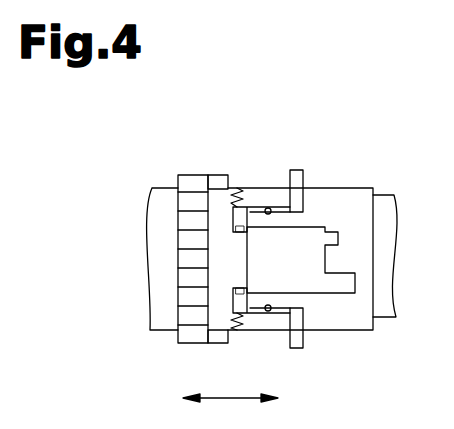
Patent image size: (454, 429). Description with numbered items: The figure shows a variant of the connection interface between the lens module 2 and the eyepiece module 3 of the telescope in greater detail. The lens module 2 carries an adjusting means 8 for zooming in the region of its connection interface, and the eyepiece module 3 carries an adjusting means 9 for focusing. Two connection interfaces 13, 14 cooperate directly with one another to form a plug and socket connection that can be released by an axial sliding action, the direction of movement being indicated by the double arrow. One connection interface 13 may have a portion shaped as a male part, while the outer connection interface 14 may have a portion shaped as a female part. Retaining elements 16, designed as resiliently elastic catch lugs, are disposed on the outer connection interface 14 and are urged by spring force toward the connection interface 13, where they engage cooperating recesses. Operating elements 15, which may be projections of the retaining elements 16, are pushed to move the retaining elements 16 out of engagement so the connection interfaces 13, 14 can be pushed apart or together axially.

The lens module 2 is at (170, 193).
The eyepiece module 3 is at (382, 203).
The adjusting means 8 is at (192, 183).
The adjusting means 9 is at (222, 182).
The connection interface 13 is at (307, 237).
The connection interface 14 is at (343, 330).
The operating element 15 is at (297, 180).
The retaining element 16 is at (240, 229).